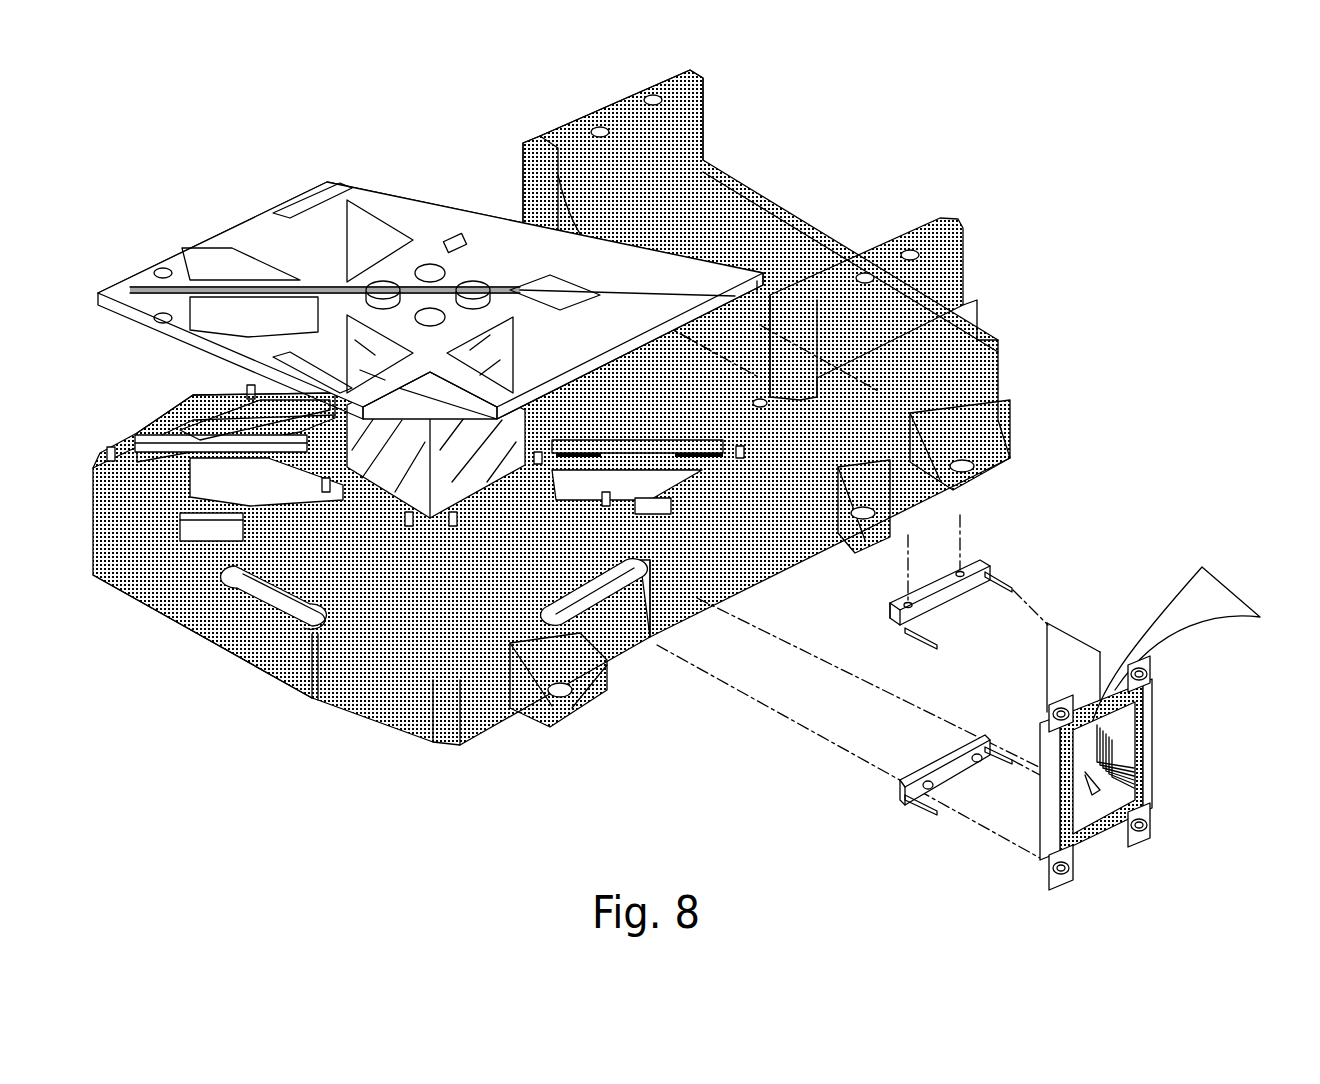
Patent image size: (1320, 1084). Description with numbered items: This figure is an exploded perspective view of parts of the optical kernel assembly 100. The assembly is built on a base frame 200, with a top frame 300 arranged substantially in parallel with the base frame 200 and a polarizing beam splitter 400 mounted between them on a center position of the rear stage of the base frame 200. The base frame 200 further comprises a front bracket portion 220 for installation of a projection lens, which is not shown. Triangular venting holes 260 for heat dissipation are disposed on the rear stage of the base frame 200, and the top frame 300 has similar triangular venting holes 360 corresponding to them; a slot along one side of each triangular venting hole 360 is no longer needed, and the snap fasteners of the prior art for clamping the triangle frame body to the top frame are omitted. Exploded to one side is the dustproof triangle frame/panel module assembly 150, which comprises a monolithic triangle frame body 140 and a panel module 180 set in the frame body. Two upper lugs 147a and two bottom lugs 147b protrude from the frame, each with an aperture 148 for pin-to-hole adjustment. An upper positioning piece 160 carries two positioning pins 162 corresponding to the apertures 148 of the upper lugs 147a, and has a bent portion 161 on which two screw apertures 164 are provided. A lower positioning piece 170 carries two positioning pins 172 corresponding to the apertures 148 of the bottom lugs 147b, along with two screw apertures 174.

The optical kernel assembly 100 is at (1066, 189).
The triangle frame body 140 is at (1065, 637).
The upper lugs 147a is at (1150, 670).
The bottom lugs 147b is at (1152, 820).
The aperture 148 is at (1155, 680).
The dustproof triangle frame/panel module assembly 150 is at (1142, 772).
The upper positioning piece 160 is at (975, 567).
The bent portion 161 is at (893, 612).
The positioning pins 162 is at (1000, 584).
The bar holes 164 is at (960, 572).
The lower positioning piece 170 is at (900, 797).
The positioning pins 172 is at (1005, 758).
The screw apertures 174 is at (968, 753).
The panel module 180 is at (1110, 835).
The base frame 200 is at (948, 290).
The front bracket portion 220 is at (786, 210).
The triangular venting holes 260 is at (377, 530).
The top frame 300 is at (262, 233).
The triangular venting holes 360 is at (372, 230).
The polarizing beam splitter 400 is at (200, 428).